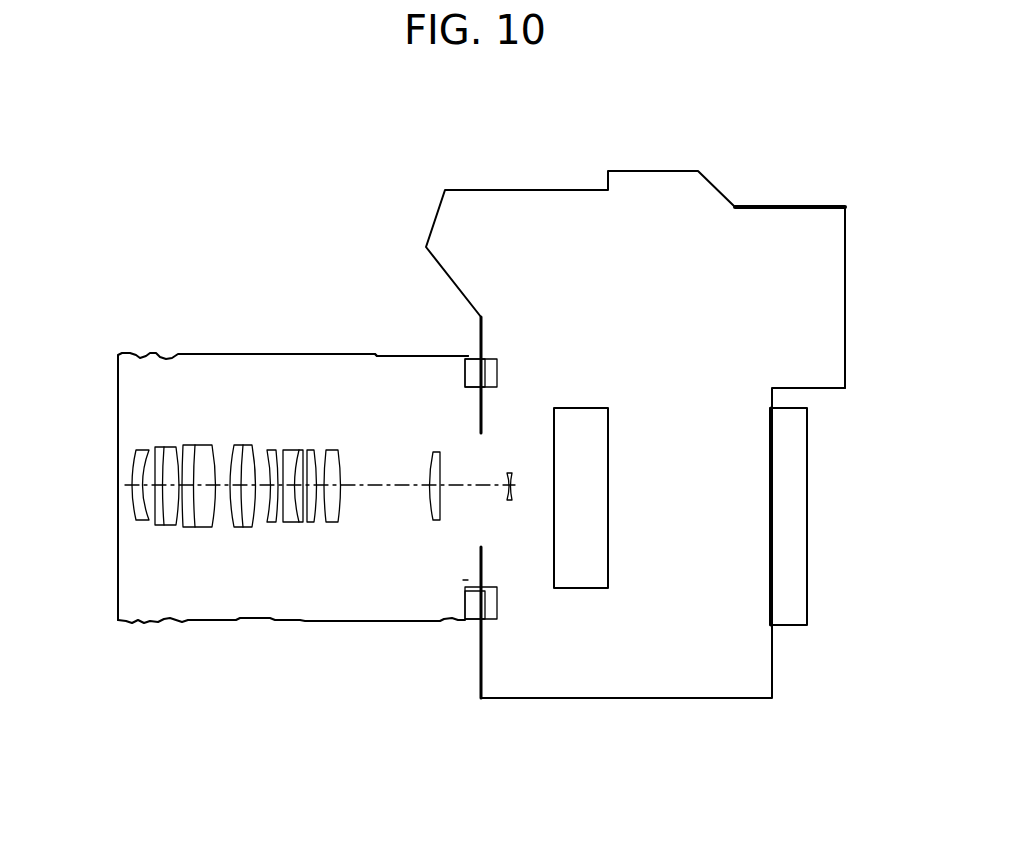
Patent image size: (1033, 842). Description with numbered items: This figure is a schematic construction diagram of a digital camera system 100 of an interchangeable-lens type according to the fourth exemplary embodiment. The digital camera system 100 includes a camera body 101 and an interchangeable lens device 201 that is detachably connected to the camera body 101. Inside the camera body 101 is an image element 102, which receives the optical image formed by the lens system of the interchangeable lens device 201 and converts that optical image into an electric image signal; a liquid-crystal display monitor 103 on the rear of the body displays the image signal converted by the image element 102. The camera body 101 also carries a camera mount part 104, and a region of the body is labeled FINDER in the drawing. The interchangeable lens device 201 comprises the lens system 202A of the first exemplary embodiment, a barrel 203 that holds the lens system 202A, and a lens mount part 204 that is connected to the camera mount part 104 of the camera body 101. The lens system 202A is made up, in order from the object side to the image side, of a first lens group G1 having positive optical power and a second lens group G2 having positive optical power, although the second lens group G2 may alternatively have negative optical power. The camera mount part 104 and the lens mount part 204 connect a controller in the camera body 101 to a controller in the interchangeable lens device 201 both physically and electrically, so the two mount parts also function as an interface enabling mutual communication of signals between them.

The digital camera system 100 is at (183, 232).
The camera body 101 is at (648, 205).
The image element 102 is at (600, 588).
The liquid-crystal display monitor 103 is at (803, 560).
The camera mount part 104 is at (495, 352).
The interchangeable lens device 201 is at (107, 383).
The lens system 202A is at (158, 712).
The barrel 203 is at (307, 352).
The lens mount part 204 is at (470, 352).
The first lens group G1 is at (120, 529).
The second lens group G2 is at (228, 529).
The finder FINDER is at (843, 295).